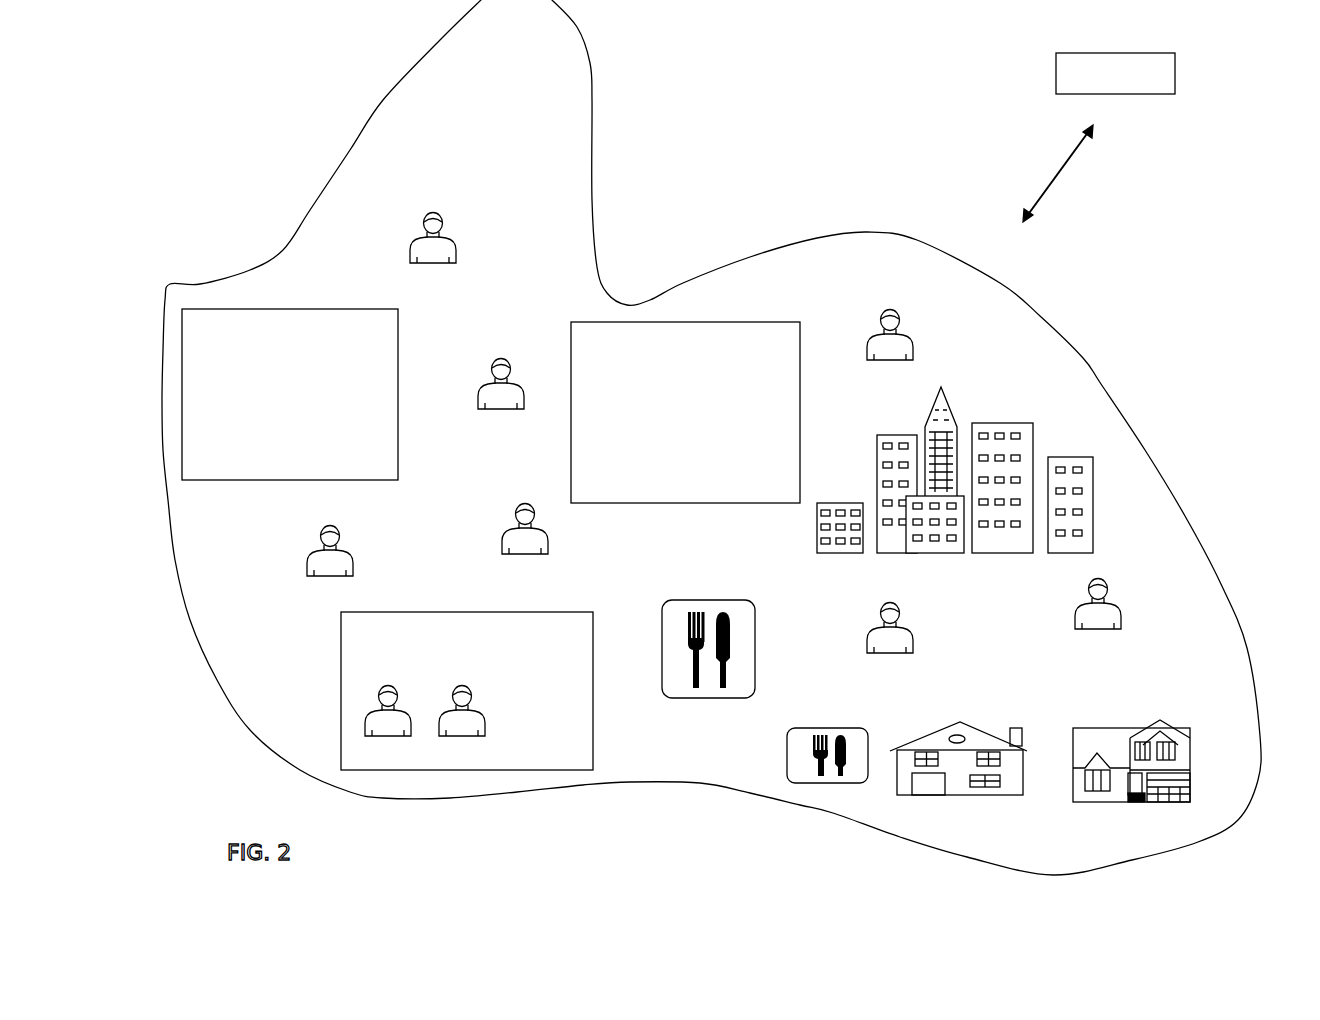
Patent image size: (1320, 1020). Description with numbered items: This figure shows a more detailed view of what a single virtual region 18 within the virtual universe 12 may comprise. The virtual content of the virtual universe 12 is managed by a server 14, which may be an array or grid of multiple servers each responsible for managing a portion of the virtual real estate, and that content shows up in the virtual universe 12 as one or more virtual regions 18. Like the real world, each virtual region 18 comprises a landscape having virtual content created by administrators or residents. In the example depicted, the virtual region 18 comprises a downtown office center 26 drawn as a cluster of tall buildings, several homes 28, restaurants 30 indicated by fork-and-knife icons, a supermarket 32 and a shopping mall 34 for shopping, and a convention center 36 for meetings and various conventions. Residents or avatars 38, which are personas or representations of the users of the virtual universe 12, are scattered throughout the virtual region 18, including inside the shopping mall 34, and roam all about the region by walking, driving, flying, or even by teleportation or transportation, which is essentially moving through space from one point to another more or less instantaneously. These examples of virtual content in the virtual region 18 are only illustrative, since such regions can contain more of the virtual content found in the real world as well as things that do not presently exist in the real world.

The virtual universe 12 is at (226, 91).
The server 14 is at (1099, 137).
The virtual region 18 is at (590, 63).
The downtown office center 26 is at (1027, 413).
The homes 28 is at (972, 795).
The restaurants 30 is at (755, 655).
The supermarket 32 is at (292, 309).
The shopping mall 34 is at (340, 690).
The convention center 36 is at (672, 503).
The avatars 38 is at (457, 235).